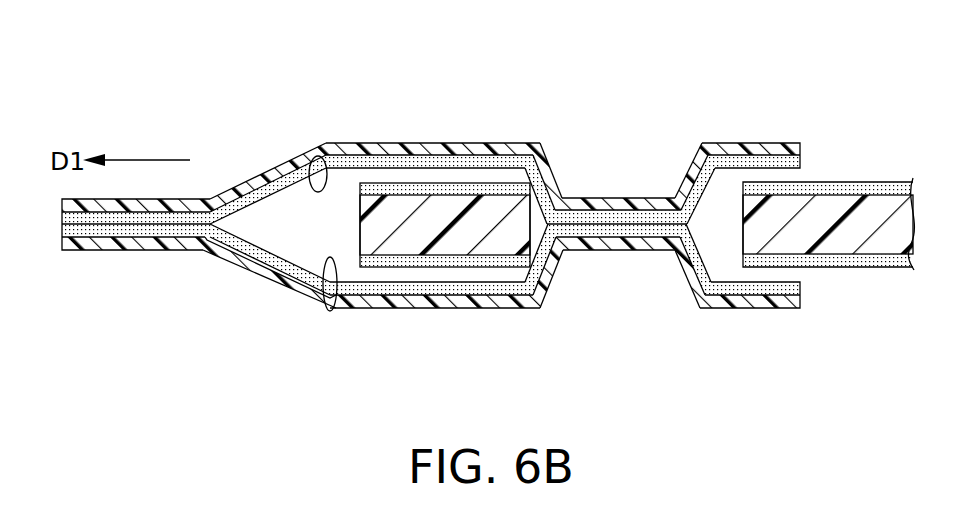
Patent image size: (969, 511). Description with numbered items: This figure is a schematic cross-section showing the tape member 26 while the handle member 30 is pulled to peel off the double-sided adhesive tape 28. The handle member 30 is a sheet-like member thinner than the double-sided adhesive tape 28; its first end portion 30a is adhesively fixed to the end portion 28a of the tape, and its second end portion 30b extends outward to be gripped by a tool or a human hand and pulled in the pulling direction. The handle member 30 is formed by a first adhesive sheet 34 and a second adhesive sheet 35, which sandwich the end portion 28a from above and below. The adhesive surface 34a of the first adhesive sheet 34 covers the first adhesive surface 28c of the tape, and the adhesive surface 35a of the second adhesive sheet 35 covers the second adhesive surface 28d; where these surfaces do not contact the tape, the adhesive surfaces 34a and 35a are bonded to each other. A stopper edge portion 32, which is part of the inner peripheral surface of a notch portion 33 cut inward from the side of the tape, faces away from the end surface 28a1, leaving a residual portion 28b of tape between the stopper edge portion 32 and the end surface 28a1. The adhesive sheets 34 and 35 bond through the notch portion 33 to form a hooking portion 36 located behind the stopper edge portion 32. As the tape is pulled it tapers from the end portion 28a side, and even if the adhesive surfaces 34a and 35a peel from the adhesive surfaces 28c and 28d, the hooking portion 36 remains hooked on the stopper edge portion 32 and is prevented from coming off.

The tape member 26 is at (134, 31).
The double-sided adhesive tape 28 is at (897, 180).
The end portion 28a is at (828, 224).
The end surface 28a1 is at (352, 228).
The residual portion 28b is at (396, 225).
The first adhesive surface 28c is at (476, 184).
The second adhesive surface 28d is at (458, 268).
The handle member 30 is at (143, 256).
The first end portion 30a is at (788, 150).
The second end portion 30b is at (88, 251).
The stopper edge portion 32 is at (562, 196).
The notch portion 33 is at (742, 226).
The first adhesive sheet 34 is at (268, 168).
The adhesive surface 34a is at (314, 156).
The second adhesive sheet 35 is at (299, 300).
The adhesive surface 35a is at (328, 312).
The hooking portion 36 is at (626, 196).